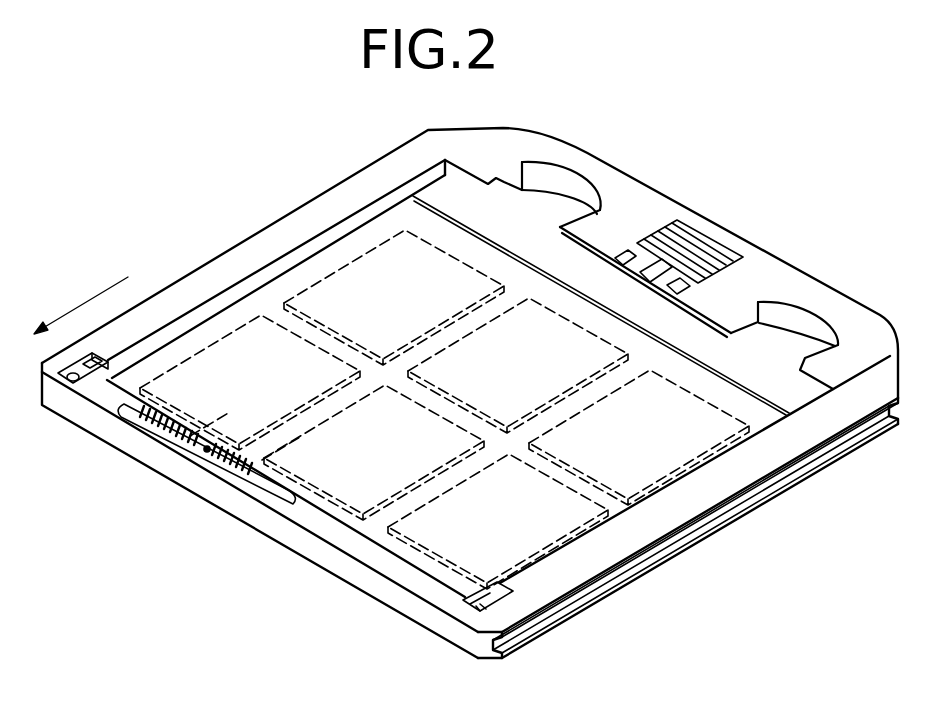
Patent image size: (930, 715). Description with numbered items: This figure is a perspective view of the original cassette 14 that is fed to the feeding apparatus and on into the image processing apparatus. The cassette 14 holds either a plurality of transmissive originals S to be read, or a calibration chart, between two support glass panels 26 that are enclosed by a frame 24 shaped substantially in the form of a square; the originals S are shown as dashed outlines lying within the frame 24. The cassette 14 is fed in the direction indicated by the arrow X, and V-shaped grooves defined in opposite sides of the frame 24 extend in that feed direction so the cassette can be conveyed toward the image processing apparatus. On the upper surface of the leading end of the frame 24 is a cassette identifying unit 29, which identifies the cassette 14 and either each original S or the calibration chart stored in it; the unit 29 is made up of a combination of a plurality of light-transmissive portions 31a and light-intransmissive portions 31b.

The original cassette 14 is at (200, 503).
The frame 24 is at (648, 200).
The support glass panels 26 is at (318, 248).
The cassette identifying unit 29 is at (126, 412).
The light-transmissive portions 31a is at (190, 436).
The light-intransmissive portions 31b is at (262, 460).
The transmissive originals S is at (233, 343).
The arrow X (feed direction) X is at (81, 305).